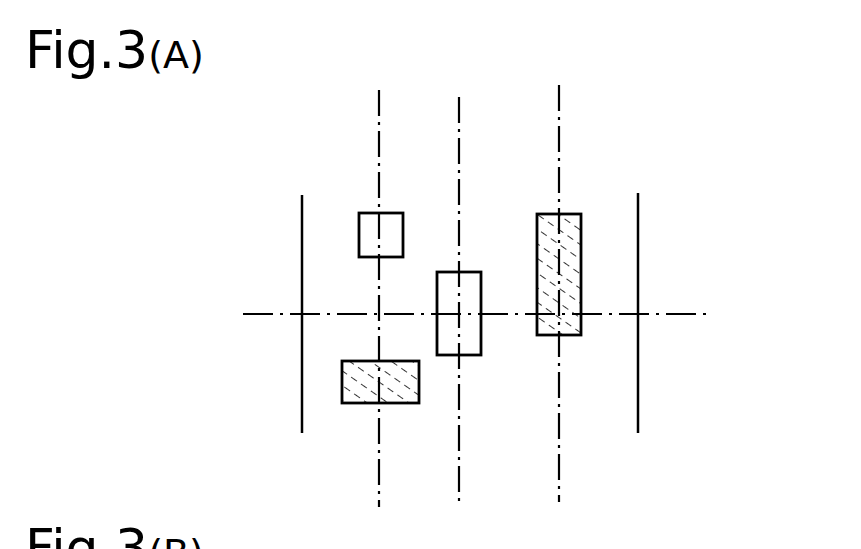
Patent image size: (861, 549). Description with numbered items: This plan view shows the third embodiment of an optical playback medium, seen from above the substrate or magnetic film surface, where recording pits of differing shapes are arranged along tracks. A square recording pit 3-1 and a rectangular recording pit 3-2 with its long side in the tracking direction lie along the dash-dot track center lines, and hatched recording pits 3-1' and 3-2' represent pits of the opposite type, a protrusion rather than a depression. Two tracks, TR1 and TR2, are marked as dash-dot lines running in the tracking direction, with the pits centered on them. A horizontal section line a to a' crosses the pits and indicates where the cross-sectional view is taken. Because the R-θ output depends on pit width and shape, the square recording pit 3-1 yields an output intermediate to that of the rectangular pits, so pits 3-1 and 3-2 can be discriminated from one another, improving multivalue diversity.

The square recording pit 3-1 is at (400, 187).
The recording pit 3-2 is at (621, 240).
The recording pit 3-1' is at (362, 426).
The recording pit 3-2' is at (534, 320).
The track 1 TR1 is at (459, 485).
The track 2 TR2 is at (559, 480).
The section line a end a is at (459, 315).
The section line a' end a' is at (738, 318).